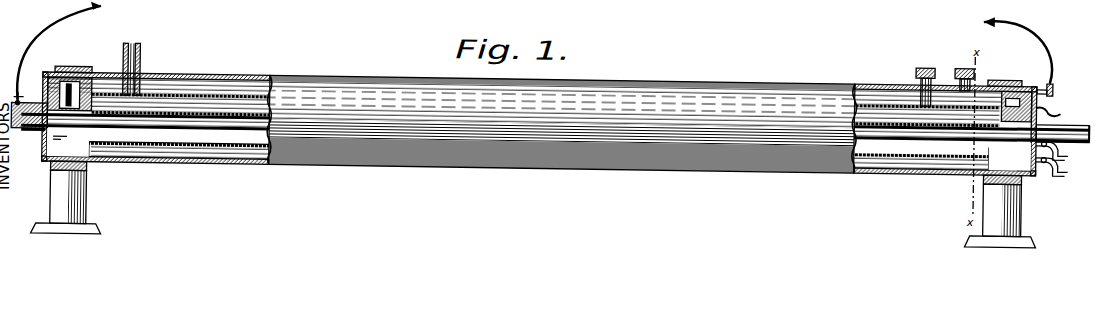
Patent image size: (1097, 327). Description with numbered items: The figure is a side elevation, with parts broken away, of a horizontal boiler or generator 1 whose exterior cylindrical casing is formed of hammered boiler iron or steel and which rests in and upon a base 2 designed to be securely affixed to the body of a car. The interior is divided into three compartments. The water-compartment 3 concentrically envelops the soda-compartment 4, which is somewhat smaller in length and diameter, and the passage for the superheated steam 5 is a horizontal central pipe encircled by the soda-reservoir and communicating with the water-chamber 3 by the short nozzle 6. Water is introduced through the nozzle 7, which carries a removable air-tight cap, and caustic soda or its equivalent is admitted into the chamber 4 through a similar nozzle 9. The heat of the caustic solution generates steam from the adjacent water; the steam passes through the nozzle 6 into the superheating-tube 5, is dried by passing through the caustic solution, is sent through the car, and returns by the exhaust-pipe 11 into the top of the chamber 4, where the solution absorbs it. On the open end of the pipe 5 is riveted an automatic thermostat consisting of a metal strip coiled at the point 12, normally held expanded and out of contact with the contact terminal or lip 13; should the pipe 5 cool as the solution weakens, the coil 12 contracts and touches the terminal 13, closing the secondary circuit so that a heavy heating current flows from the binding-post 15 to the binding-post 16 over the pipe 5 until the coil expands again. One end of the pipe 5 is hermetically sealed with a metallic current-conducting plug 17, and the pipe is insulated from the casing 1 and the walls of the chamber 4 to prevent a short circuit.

The boiler or generator 1 is at (233, 72).
The base 2 is at (77, 66).
The water-compartment 3 is at (1016, 106).
The soda-compartment 4 is at (539, 148).
The passage for the superheated steam 5 is at (1069, 145).
The short nozzle 6 is at (96, 77).
The nozzle 7 is at (965, 55).
The nozzle 9 is at (926, 55).
The exhaust-pipe 11 is at (141, 55).
The coil 12 is at (1060, 108).
The contact terminal or lip 13 is at (1050, 97).
The binding-post 15 is at (1054, 74).
The binding-post 16 is at (18, 92).
The metallic current-conducting plug 17 is at (20, 128).